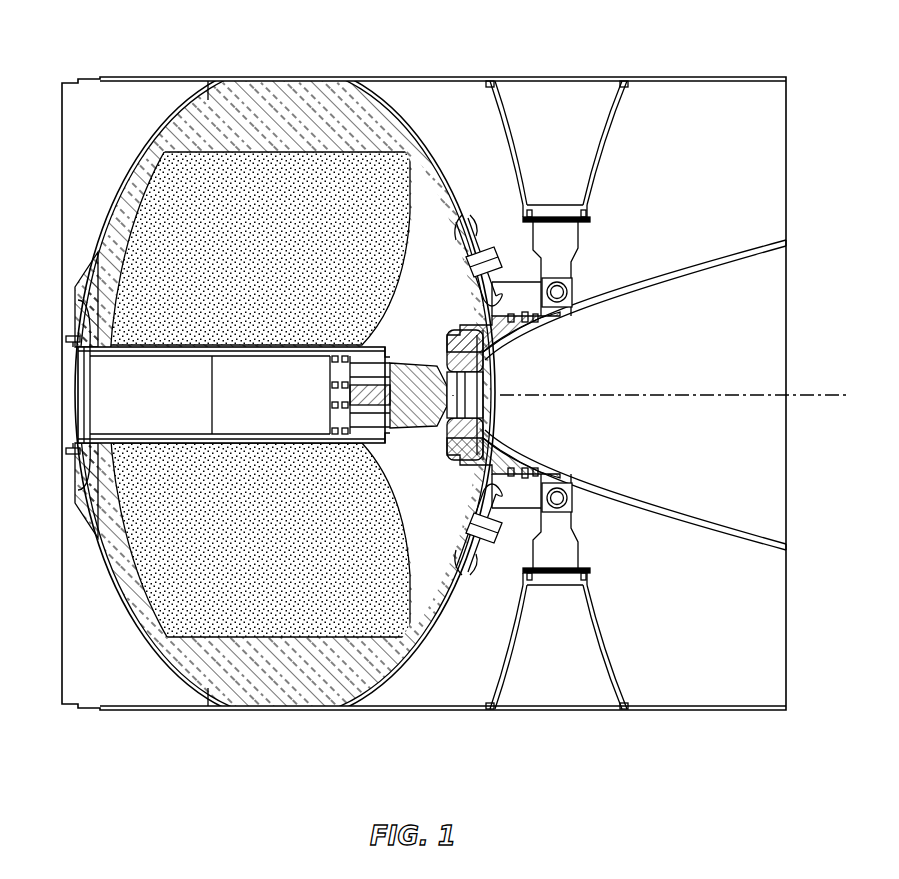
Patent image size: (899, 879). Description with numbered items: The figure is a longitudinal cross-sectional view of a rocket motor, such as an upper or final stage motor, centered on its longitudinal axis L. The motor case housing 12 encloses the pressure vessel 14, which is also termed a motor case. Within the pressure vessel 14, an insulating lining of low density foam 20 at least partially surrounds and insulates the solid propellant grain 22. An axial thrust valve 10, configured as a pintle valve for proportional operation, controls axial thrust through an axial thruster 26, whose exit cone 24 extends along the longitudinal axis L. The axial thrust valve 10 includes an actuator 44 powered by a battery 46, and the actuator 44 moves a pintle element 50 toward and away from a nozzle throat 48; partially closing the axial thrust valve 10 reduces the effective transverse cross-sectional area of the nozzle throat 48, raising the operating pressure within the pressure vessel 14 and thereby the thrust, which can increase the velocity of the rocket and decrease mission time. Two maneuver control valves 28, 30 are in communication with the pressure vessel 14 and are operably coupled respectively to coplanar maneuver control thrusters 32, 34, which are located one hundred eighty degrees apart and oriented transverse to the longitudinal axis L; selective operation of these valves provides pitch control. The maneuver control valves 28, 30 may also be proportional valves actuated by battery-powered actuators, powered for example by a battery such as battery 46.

The axial thrust valve 10 is at (453, 396).
The motor case housing 12 is at (717, 75).
The pressure vessel 14 is at (331, 382).
The low density foam 20 is at (227, 118).
The solid propellant grain 22 is at (370, 185).
The exit cone 24 is at (717, 262).
The axial thruster 26 is at (786, 548).
The maneuver control valve 28 is at (584, 255).
The maneuver control valve 30 is at (586, 547).
The maneuver control thruster 32 is at (613, 148).
The maneuver control thruster 34 is at (613, 660).
The actuator 44 is at (275, 411).
The battery 46 is at (157, 411).
The nozzle throat 48 is at (470, 387).
The pintle element 50 is at (416, 372).
The longitudinal axis L is at (706, 397).